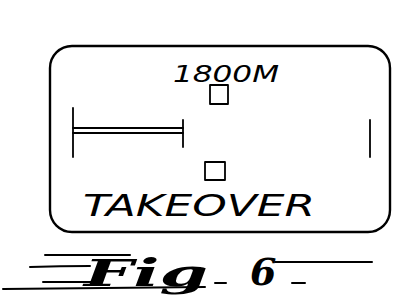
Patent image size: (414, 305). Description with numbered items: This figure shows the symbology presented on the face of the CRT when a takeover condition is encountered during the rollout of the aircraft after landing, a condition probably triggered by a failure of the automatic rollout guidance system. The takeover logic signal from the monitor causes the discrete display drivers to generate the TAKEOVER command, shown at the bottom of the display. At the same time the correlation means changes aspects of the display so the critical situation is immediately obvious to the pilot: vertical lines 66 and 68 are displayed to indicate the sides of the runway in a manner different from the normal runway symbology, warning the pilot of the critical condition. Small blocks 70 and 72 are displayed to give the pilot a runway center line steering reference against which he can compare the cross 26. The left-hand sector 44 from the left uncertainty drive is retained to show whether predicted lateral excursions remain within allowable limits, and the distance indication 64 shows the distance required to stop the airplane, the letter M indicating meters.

The distance indication 64 is at (255, 60).
The vertical line 66 is at (74, 110).
The vertical line 68 is at (369, 133).
The left-hand sector 44 is at (157, 134).
The cross 26 is at (184, 124).
The small block 72 is at (229, 95).
The small block 70 is at (226, 171).